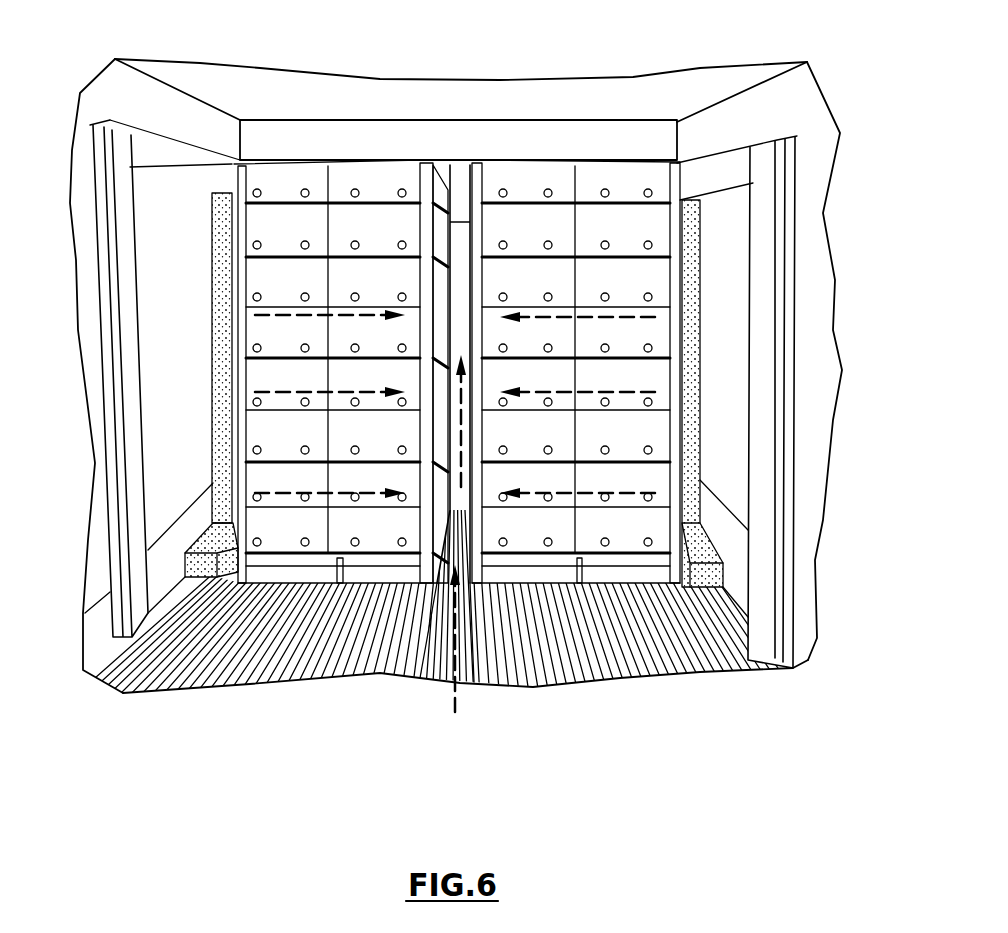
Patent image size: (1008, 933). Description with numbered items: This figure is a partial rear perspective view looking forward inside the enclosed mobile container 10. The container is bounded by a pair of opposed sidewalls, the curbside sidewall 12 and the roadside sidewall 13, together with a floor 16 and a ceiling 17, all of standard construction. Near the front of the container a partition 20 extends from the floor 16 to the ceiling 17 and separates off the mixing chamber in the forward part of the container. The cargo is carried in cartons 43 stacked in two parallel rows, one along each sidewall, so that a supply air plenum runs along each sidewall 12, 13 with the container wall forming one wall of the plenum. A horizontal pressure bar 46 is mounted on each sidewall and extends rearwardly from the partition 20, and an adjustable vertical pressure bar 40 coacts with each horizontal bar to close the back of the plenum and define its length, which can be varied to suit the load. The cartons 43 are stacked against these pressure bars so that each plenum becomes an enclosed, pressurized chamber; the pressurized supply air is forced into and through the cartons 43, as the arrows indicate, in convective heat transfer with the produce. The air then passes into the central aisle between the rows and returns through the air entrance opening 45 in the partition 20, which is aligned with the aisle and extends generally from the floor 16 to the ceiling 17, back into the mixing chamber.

The enclosed mobile container 10 is at (240, 710).
The curbside sidewall 12 is at (813, 402).
The roadside sidewall 13 is at (102, 567).
The floor 16 is at (652, 662).
The ceiling 17 is at (242, 90).
The partition 20 is at (628, 140).
The adjustable vertical pressure bar 40 is at (213, 297).
The cartons 43 is at (277, 175).
The air entrance opening 45 is at (460, 237).
The horizontal pressure bar 46 is at (163, 157).